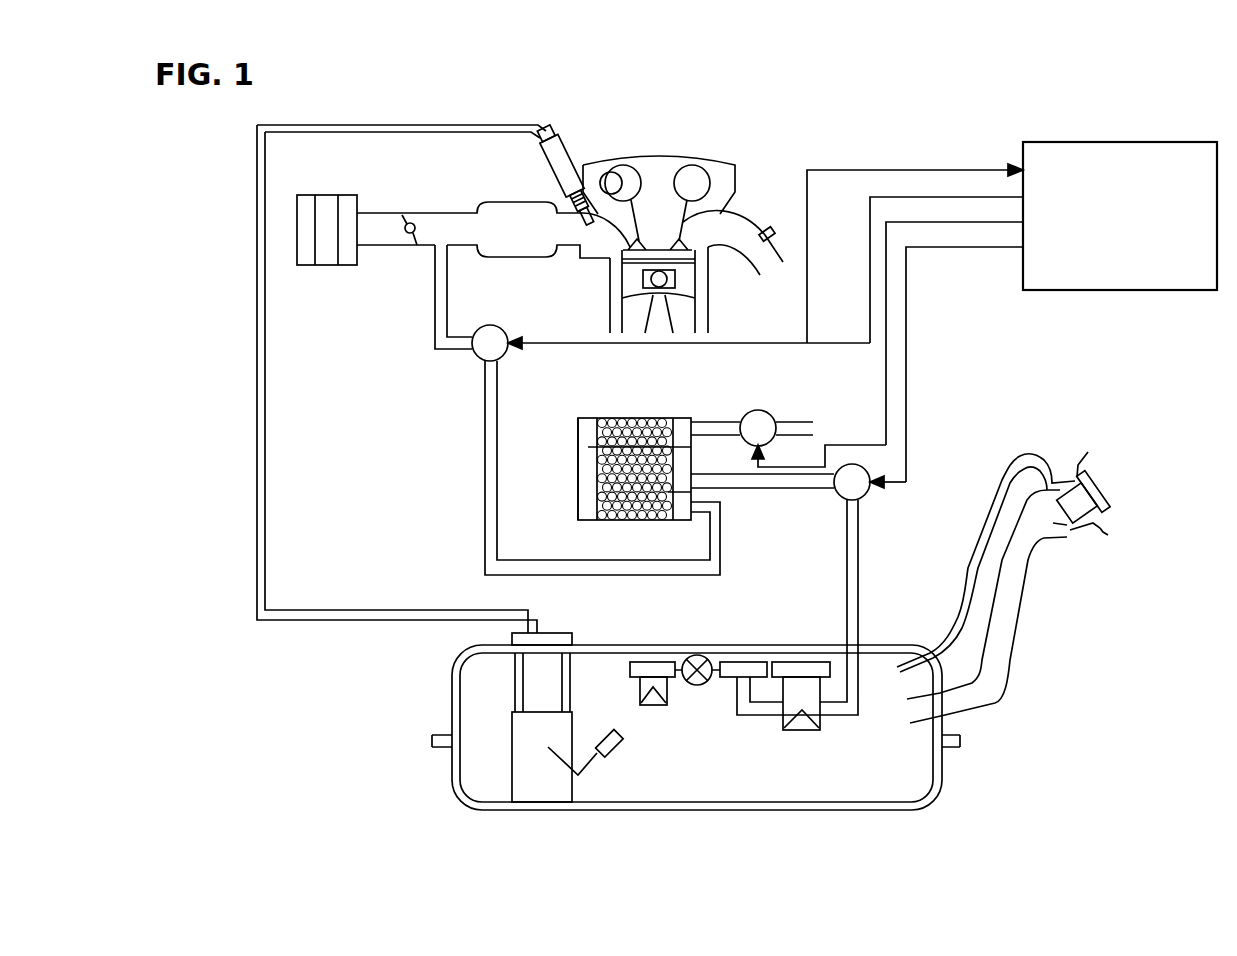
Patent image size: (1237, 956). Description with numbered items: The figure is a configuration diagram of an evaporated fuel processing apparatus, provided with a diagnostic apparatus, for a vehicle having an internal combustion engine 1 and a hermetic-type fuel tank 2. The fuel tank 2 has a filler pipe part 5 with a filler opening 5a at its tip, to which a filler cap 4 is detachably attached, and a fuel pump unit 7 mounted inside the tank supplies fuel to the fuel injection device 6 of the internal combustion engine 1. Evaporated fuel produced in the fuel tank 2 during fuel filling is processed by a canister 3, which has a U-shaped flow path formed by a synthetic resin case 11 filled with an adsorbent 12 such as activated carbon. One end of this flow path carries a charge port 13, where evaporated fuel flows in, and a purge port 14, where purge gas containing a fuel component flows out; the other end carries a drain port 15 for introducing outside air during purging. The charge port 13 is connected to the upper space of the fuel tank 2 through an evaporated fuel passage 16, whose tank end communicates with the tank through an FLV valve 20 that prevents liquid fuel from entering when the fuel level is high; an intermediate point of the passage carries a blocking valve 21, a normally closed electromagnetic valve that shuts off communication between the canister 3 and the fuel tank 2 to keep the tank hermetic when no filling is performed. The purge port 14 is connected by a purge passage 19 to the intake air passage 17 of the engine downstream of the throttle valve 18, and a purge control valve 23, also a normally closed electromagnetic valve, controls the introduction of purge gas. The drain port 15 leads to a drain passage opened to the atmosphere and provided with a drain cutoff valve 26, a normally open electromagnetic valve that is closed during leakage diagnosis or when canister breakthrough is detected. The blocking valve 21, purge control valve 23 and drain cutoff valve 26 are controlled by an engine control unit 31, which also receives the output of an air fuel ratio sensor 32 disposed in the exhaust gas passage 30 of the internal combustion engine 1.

The internal combustion engine 1 is at (723, 141).
The fuel tank 2 is at (858, 798).
The canister 3 is at (597, 439).
The filler cap 4 is at (1105, 490).
The filler pipe part 5 is at (992, 588).
The filler opening 5a is at (1058, 517).
The fuel injection device 6 is at (559, 167).
The fuel pump unit 7 is at (518, 753).
The case 11 is at (577, 453).
The adsorbent 12 is at (608, 472).
The charge port 13 is at (698, 483).
The purge port 14 is at (700, 510).
The drain port 15 is at (703, 425).
The evaporated fuel passage 16 is at (853, 545).
The intake air passage 17 is at (460, 222).
The throttle valve 18 is at (409, 245).
The purge passage 19 is at (440, 323).
The FLV valve 20 is at (788, 688).
The blocking valve 21 is at (838, 499).
The purge control valve 23 is at (478, 356).
The drain cutoff valve 26 is at (762, 412).
The exhaust gas passage 30 is at (772, 252).
The engine control unit 31 is at (1080, 150).
The air fuel ratio sensor 32 is at (780, 230).